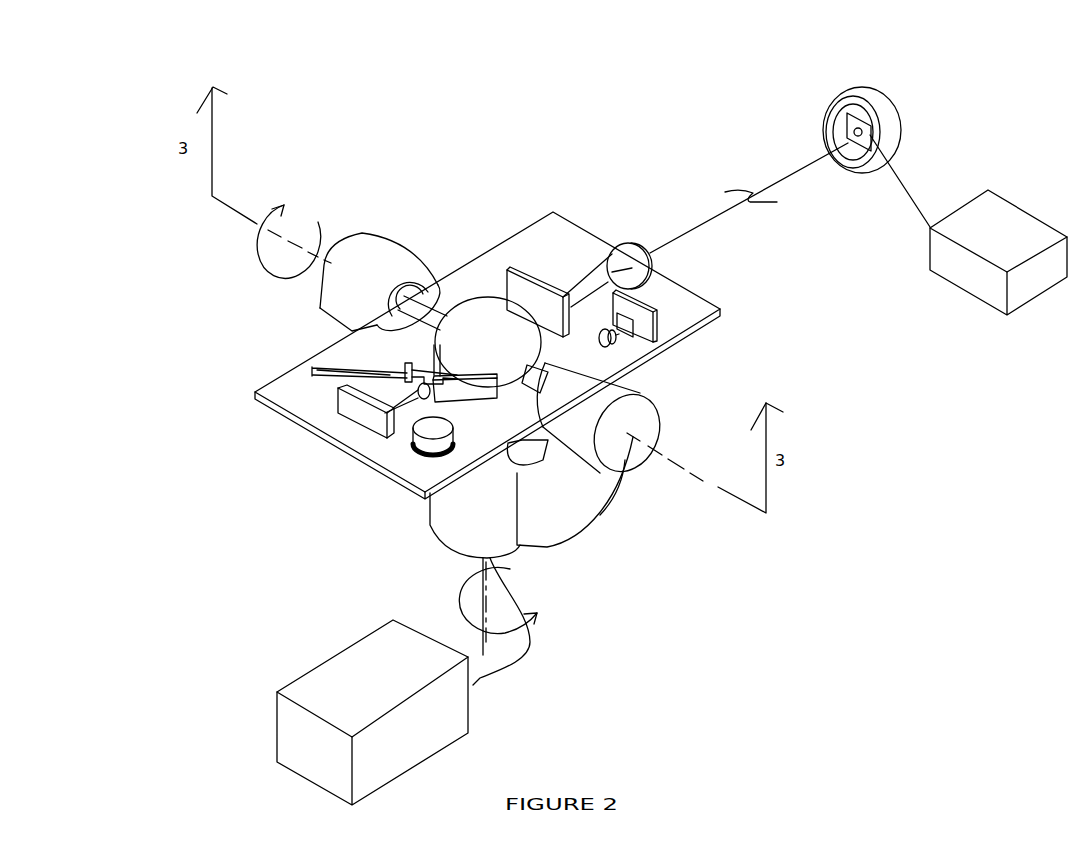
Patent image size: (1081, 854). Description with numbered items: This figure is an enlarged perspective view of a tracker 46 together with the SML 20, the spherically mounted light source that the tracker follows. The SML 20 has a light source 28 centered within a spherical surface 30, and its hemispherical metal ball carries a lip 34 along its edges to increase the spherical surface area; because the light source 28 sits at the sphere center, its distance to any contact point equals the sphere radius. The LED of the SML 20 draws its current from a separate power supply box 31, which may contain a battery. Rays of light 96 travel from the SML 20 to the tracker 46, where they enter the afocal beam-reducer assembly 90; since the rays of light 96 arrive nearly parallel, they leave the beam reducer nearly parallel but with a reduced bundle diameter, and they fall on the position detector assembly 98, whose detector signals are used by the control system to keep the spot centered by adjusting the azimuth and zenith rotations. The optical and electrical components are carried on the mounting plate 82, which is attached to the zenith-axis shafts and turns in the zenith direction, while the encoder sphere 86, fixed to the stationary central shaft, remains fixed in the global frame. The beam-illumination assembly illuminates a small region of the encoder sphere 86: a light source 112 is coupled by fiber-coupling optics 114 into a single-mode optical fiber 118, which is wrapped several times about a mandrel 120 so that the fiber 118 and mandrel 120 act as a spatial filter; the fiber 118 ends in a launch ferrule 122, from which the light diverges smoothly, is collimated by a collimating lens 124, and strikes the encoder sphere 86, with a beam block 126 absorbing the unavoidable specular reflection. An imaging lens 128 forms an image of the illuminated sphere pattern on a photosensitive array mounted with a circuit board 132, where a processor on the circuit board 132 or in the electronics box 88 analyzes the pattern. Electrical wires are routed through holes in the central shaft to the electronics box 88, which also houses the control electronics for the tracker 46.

The SML 20 is at (913, 89).
The tracker 46 is at (575, 92).
The light source 28 is at (847, 131).
The spherical surface 30 is at (900, 137).
The lip 34 is at (860, 172).
The power supply box 31 is at (927, 262).
The rays of light 96 is at (705, 226).
The position detector assembly 98 is at (522, 262).
The afocal beam-reducer assembly 90 is at (605, 228).
The mounting plate 82 is at (500, 250).
The encoder sphere 86 is at (442, 331).
The light source 112 is at (657, 341).
The fiber-coupling optics 114 is at (622, 345).
The beam block 126 is at (517, 474).
The electronics box 88 is at (473, 708).
The mandrel 120 is at (410, 452).
The circuit board 132 is at (363, 418).
The imaging lens 128 is at (340, 396).
The launch ferrule 122 is at (365, 360).
The collimating lens 124 is at (433, 345).
The single-mode optical fiber 118 is at (318, 386).